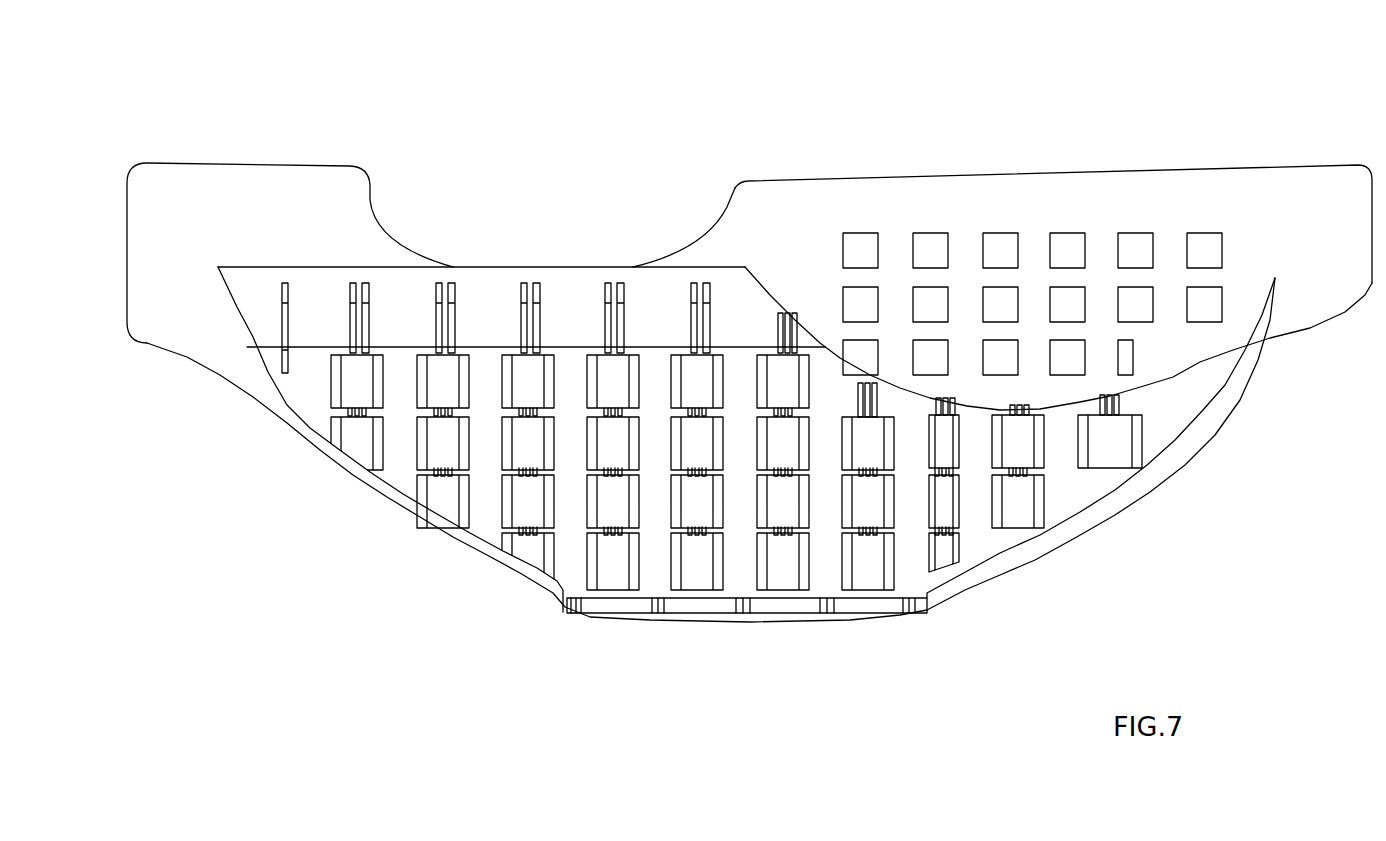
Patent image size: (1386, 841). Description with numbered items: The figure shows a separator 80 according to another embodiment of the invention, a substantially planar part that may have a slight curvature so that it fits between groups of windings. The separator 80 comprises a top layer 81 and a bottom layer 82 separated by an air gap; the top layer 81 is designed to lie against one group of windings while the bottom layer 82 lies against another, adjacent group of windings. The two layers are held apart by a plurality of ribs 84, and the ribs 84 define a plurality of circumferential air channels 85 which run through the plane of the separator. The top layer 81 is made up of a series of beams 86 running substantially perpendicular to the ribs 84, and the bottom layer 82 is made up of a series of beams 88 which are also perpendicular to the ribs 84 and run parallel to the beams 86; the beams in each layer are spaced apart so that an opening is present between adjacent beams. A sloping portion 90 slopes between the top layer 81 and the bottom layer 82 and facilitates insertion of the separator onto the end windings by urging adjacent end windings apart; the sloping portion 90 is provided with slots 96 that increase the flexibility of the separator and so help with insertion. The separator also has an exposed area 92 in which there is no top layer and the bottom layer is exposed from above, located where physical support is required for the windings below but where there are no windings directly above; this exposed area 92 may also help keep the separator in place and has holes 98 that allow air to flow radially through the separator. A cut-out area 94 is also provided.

The separator 80 is at (860, 105).
The top layer 81 is at (1073, 493).
The bottom layer 82 is at (1173, 340).
The ribs 84 is at (340, 412).
The circumferential air channels 85 is at (423, 500).
The beams 86 is at (655, 563).
The beams 88 is at (613, 572).
The sloping portion 90 is at (582, 303).
The exposed area 92 is at (1137, 197).
The cut-out area 94 is at (713, 225).
The slots 96 is at (453, 313).
The holes 98 is at (1002, 237).